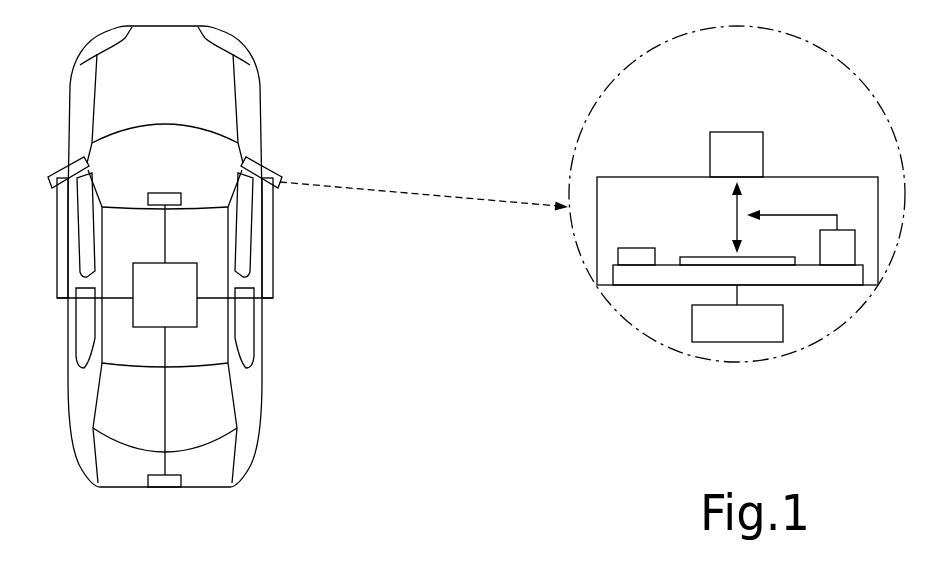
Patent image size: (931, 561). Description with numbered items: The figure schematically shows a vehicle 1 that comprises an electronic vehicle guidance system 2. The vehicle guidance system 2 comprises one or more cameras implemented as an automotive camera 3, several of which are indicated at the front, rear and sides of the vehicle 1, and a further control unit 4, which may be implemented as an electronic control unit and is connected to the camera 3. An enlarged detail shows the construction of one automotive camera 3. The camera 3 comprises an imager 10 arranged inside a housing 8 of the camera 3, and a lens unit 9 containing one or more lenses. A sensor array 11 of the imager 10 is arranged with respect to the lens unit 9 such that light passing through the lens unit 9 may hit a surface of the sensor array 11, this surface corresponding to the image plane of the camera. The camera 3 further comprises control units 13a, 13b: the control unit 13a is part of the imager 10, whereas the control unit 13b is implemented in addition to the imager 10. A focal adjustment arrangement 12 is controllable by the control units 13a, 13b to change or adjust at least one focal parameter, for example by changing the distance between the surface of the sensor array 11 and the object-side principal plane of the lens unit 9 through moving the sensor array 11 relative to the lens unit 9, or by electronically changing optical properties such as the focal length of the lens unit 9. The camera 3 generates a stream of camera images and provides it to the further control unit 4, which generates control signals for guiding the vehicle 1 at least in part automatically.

The vehicle 1 is at (256, 73).
The electronic vehicle guidance system 2 is at (212, 345).
The automotive camera 3 is at (55, 182).
The further control unit 4 is at (173, 311).
The housing 8 is at (648, 177).
The lens unit 9 is at (738, 132).
The imager 10 is at (816, 276).
The sensor array 11 is at (695, 257).
The focal adjustment arrangement 12 is at (847, 243).
The control unit 13a is at (620, 256).
The control unit 13b is at (728, 330).